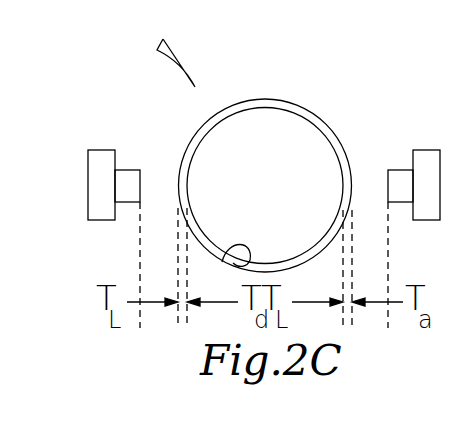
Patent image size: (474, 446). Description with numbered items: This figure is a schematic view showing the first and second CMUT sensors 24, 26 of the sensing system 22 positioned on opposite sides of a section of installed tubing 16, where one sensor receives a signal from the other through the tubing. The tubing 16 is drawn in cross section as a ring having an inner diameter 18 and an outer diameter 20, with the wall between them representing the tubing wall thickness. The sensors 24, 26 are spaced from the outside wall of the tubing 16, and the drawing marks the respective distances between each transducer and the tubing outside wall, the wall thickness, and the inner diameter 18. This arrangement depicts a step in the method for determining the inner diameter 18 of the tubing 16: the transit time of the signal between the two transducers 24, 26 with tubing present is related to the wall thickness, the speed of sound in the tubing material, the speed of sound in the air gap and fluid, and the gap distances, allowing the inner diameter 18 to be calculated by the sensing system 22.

The tubing 16 is at (260, 99).
The inner diameter 18 is at (222, 262).
The outer diameter 20 is at (308, 108).
The sensing system 22 is at (157, 50).
The first CMUT sensor 24 is at (101, 220).
The second CMUT sensor 26 is at (428, 220).